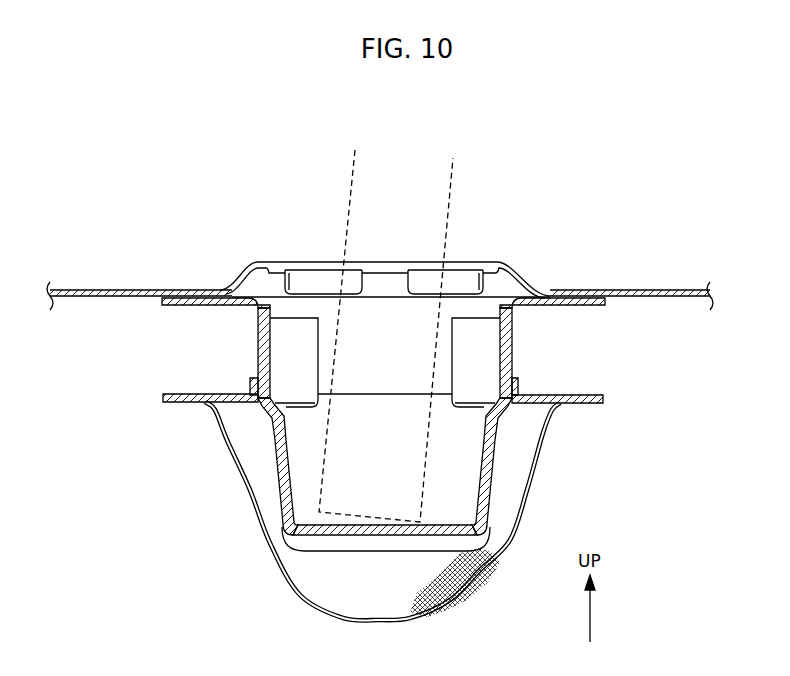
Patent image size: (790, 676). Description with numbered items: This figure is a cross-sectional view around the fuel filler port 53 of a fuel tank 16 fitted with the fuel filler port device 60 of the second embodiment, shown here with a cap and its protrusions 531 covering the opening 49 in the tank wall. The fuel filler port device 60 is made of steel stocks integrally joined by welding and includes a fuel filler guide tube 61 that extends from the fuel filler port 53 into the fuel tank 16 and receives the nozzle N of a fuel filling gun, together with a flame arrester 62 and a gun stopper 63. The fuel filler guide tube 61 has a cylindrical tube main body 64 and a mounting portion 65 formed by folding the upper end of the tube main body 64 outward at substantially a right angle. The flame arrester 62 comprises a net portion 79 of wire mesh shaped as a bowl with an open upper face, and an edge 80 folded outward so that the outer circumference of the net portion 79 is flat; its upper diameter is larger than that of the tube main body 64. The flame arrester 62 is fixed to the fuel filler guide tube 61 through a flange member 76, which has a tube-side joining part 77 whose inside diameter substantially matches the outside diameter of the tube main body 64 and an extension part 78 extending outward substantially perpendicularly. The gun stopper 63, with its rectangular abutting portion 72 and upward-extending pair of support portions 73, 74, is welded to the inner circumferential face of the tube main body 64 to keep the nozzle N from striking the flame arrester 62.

The fuel tank 16 is at (614, 280).
The opening in floor panel 49 is at (664, 289).
The fuel filler port 53 is at (518, 267).
The cap protrusions 531 is at (473, 275).
The nozzle N is at (449, 186).
The fuel filler port device 60 is at (458, 539).
The fuel filler guide tube 61 is at (549, 305).
The flame arrester 62 is at (331, 615).
The gun stopper 63 is at (488, 501).
The tube main body 64 is at (257, 341).
The mounting portion 65 is at (175, 307).
The abutting portion 72 is at (333, 543).
The support portion 73 is at (276, 468).
The support portion 74 is at (493, 455).
The flange member 76 is at (595, 370).
The tube-side joining part 77 is at (520, 386).
The extension part 78 is at (585, 396).
The net portion 79 is at (371, 623).
The edge 80 is at (180, 404).